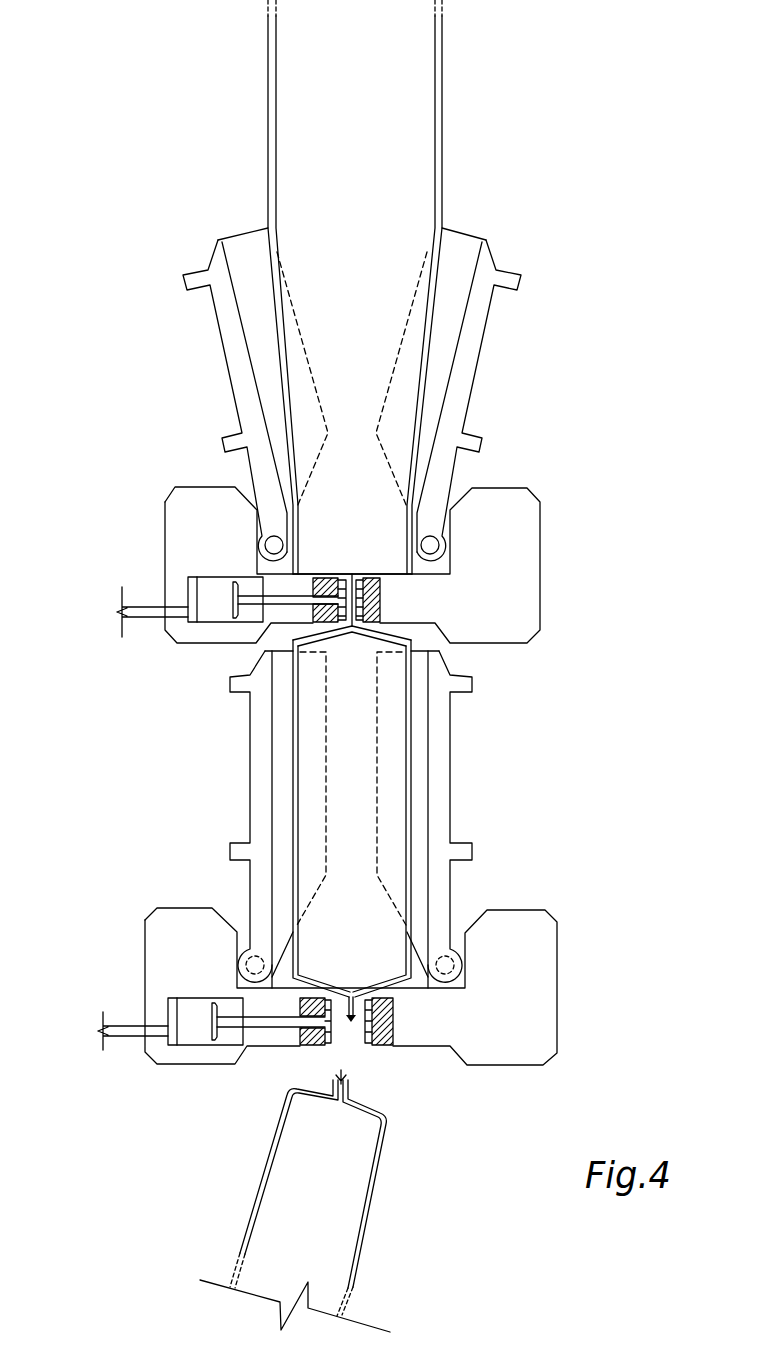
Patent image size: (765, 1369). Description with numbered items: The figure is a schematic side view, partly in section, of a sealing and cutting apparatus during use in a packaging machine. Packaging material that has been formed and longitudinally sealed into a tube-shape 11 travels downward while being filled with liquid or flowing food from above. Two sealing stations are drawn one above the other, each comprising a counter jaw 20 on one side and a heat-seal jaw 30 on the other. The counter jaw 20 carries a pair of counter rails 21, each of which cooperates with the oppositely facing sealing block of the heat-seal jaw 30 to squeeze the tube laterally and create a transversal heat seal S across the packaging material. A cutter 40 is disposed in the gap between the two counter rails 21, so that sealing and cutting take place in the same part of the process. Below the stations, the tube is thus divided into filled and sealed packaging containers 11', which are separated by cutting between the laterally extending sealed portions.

The tube-shape 11 is at (393, 287).
The packaging containers 11' is at (329, 1206).
The counter jaw 20 is at (165, 558).
The counter rails 21 is at (313, 588).
The heat-seal jaw 30 is at (556, 492).
The cutter 40 is at (287, 607).
The transversal heat seal S is at (351, 556).